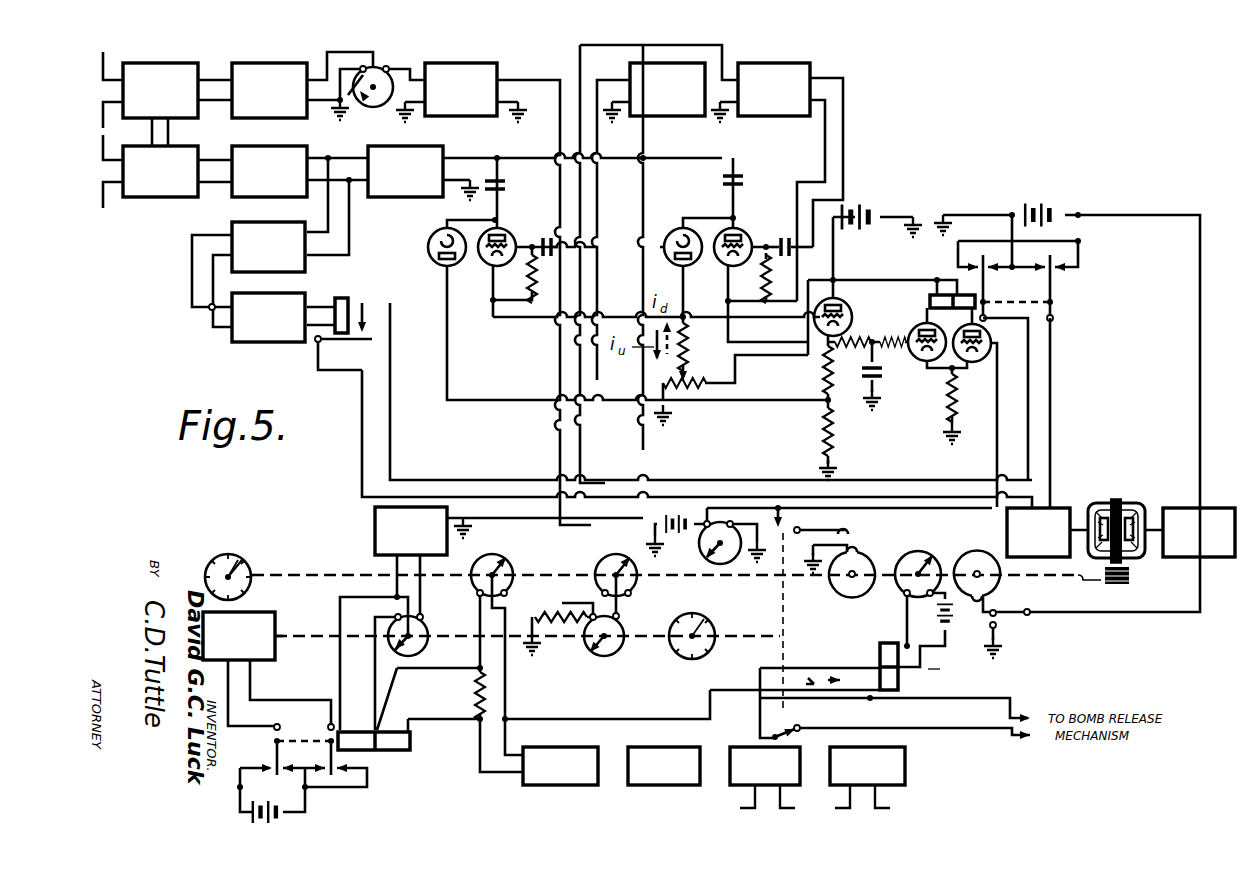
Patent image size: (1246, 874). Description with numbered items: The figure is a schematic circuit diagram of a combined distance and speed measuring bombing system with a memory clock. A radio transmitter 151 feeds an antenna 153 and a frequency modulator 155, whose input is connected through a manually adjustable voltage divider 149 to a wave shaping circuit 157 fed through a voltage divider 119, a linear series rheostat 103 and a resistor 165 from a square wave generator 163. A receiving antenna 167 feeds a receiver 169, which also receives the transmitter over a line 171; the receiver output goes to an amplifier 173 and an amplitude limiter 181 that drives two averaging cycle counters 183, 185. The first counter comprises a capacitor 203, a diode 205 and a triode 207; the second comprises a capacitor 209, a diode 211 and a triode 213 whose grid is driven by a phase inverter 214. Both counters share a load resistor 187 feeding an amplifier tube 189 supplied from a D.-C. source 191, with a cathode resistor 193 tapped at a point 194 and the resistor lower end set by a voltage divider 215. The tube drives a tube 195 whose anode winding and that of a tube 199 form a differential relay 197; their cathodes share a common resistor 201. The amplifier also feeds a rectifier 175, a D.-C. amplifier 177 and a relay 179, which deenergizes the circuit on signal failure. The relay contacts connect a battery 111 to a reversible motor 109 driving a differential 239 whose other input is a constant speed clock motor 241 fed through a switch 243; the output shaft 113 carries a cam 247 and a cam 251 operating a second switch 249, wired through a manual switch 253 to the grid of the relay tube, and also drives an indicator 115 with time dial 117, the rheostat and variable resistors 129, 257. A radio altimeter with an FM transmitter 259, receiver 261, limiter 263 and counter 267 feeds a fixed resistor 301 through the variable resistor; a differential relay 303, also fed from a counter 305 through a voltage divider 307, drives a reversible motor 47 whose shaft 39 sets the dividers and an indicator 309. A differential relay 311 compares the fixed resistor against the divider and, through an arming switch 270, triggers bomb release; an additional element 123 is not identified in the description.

The antenna 153 is at (108, 72).
The radio transmitter 151 is at (200, 62).
The frequency modulator 155 is at (254, 68).
The manually adjustable voltage divider 149 is at (385, 64).
The wave shaping circuit 157 is at (490, 62).
The phase inverter 214 is at (812, 63).
The line 171 is at (163, 128).
The amplifier 173 is at (286, 146).
The amplitude limiter 181 is at (386, 146).
The square wave generator 163 is at (674, 126).
The capacitor 203 is at (504, 191).
The capacitor 209 is at (736, 191).
The D.-C. source 191 is at (870, 220).
The battery 111 is at (1045, 215).
The receiving antenna 167 is at (103, 210).
The receiver 169 is at (170, 202).
The rectifier 175 is at (234, 224).
The averaging cycle counter circuit 183 is at (521, 214).
The triode 207 is at (515, 242).
The averaging cycle counter circuit 185 is at (705, 214).
The triode 213 is at (742, 240).
The diode 211 is at (664, 247).
The diode 205 is at (430, 247).
The differential relay 197 is at (930, 292).
The amplifier tube 189 is at (850, 322).
The tube 199 is at (991, 338).
The D.-C. amplifier 177 is at (230, 340).
The relay 179 is at (345, 298).
The common load resistor 187 is at (687, 349).
The resistor 193 is at (826, 373).
The intermediate point 194 is at (826, 400).
The tube 195 is at (920, 366).
The common resistor 201 is at (955, 398).
The voltage divider 215 is at (690, 398).
The manually operable switch 253 is at (780, 505).
The reversible motor 109 is at (1045, 508).
The differential 239 is at (1118, 500).
The indicator 115 is at (228, 554).
The time dial 117 is at (250, 574).
The counter 305 is at (375, 523).
The variable resistor 129 is at (498, 560).
The series rheostat 103 is at (631, 573).
The second switch 249 is at (830, 542).
The cam 251 is at (900, 556).
The variable resistor 257 is at (923, 550).
The cam 247 is at (980, 540).
The switch 123 is at (806, 562).
The resistor 165 is at (532, 614).
The voltage divider 119 is at (619, 629).
The indicator 309 is at (723, 637).
The switch 243 is at (1024, 613).
The output shaft 113 is at (1101, 582).
The constant speed clock motor 241 is at (1170, 559).
The reversible motor 47 is at (278, 620).
The shaft 39 is at (320, 638).
The voltage divider 307 is at (424, 649).
The differential relay 311 is at (880, 650).
The fixed resistor 301 is at (487, 697).
The differential relay 303 is at (398, 752).
The manually operated arming switch 270 is at (783, 728).
The counter 267 is at (575, 790).
The limiter 263 is at (675, 790).
The receiver 261 is at (735, 790).
The FM transmitter 259 is at (906, 772).